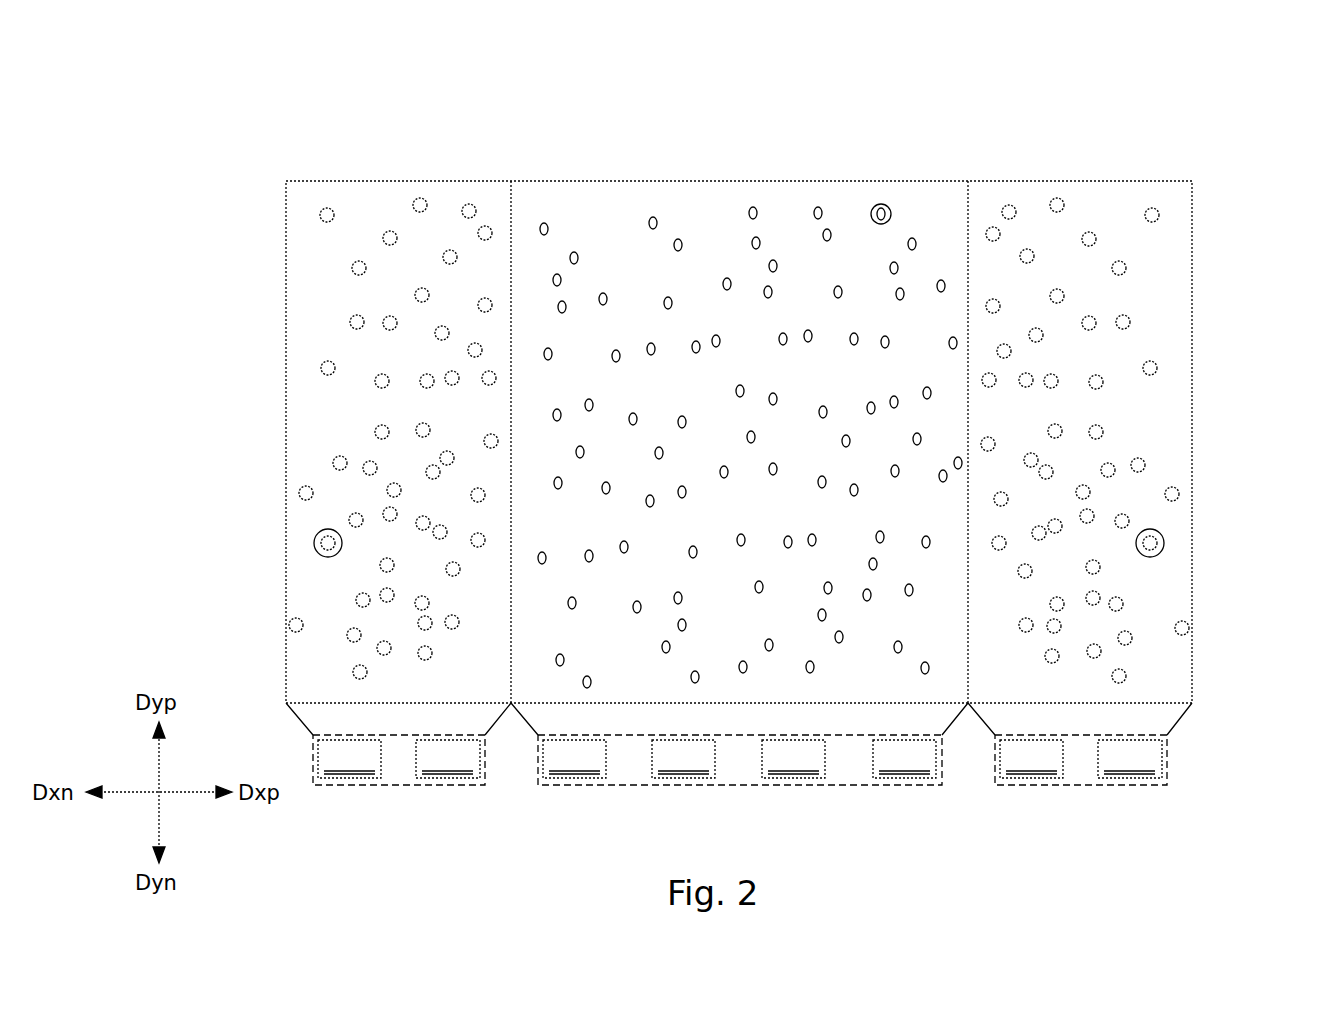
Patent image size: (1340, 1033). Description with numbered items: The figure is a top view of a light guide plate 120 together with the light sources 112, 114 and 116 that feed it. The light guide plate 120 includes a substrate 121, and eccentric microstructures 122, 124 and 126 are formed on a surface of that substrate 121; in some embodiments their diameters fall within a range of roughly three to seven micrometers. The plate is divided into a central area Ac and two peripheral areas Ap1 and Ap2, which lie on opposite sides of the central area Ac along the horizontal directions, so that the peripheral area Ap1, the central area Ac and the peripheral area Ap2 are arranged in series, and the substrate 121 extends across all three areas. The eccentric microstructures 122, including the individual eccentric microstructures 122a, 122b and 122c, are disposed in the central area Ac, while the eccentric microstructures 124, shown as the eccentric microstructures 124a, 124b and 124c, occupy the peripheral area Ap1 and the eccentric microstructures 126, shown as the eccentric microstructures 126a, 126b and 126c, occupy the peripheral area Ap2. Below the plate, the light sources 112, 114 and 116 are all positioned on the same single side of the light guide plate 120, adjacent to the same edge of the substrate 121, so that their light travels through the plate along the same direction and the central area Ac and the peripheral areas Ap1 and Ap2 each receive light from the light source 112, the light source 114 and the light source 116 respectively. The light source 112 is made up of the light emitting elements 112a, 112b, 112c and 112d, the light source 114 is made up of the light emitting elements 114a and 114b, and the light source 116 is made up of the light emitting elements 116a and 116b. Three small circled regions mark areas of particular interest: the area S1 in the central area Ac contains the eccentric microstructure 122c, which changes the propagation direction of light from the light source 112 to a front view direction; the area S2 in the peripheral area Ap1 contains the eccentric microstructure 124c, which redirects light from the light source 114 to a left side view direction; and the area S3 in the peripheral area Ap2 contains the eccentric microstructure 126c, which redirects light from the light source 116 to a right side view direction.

The light guide plate 120 is at (1234, 105).
The substrate 121 is at (287, 206).
The eccentric microstructures 122 is at (910, 128).
The eccentric microstructure 122a is at (754, 206).
The eccentric microstructure 122b is at (820, 206).
The eccentric microstructure 122c is at (880, 204).
The eccentric microstructures 124 is at (225, 365).
The eccentric microstructure 124a is at (321, 368).
The eccentric microstructure 124b is at (375, 431).
The eccentric microstructure 124c is at (317, 545).
The eccentric microstructures 126 is at (1255, 365).
The eccentric microstructure 126a is at (1156, 368).
The eccentric microstructure 126b is at (1102, 431).
The eccentric microstructure 126c is at (1160, 545).
The light source 112 is at (736, 788).
The light emitting element 112a is at (574, 759).
The light emitting element 112b is at (683, 759).
The light emitting element 112c is at (793, 759).
The light emitting element 112d is at (904, 759).
The light source 114 is at (386, 788).
The light emitting element 114a is at (349, 759).
The light emitting element 114b is at (448, 759).
The light source 116 is at (1068, 788).
The light emitting element 116a is at (1031, 759).
The light emitting element 116b is at (1130, 759).
The area S1 is at (891, 212).
The area S2 is at (318, 557).
The area S3 is at (1159, 557).
The peripheral area Ap1 is at (381, 195).
The central area Ac is at (611, 195).
The peripheral area Ap2 is at (1114, 195).